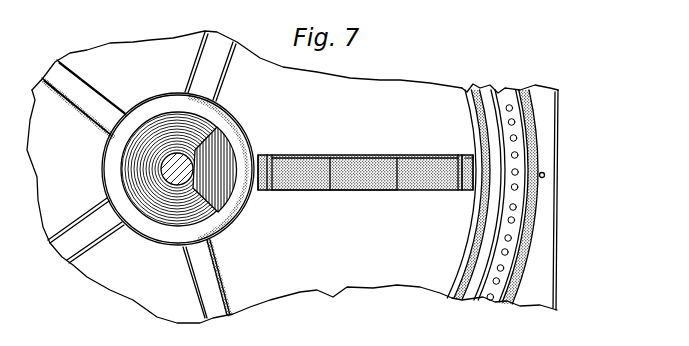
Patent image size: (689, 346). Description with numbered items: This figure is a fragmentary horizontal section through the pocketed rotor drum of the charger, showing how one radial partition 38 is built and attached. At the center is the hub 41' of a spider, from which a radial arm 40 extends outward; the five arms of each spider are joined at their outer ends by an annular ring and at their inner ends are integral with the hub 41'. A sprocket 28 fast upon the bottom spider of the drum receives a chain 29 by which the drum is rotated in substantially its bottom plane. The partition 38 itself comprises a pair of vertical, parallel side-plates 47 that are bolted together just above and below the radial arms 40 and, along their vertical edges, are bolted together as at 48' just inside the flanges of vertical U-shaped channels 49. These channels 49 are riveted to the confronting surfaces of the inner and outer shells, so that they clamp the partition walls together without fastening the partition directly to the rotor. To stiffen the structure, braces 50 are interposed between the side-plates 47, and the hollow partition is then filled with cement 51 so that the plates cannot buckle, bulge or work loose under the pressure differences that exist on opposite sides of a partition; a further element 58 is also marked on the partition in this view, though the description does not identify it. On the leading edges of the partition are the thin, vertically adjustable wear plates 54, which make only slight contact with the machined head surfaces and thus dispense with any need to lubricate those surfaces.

The sprocket 28 is at (528, 130).
The chain 29 is at (513, 90).
The partition 38 is at (162, 77).
The radial arms 40 is at (210, 76).
The hub 41' is at (178, 185).
The side-plates 47 is at (385, 202).
The bolts 48' is at (453, 156).
The U-shaped channels 49 is at (260, 152).
The braces 50 is at (333, 155).
The cement 51 is at (320, 155).
The wear plates 54 is at (365, 130).
The bolt shank 58 is at (347, 190).